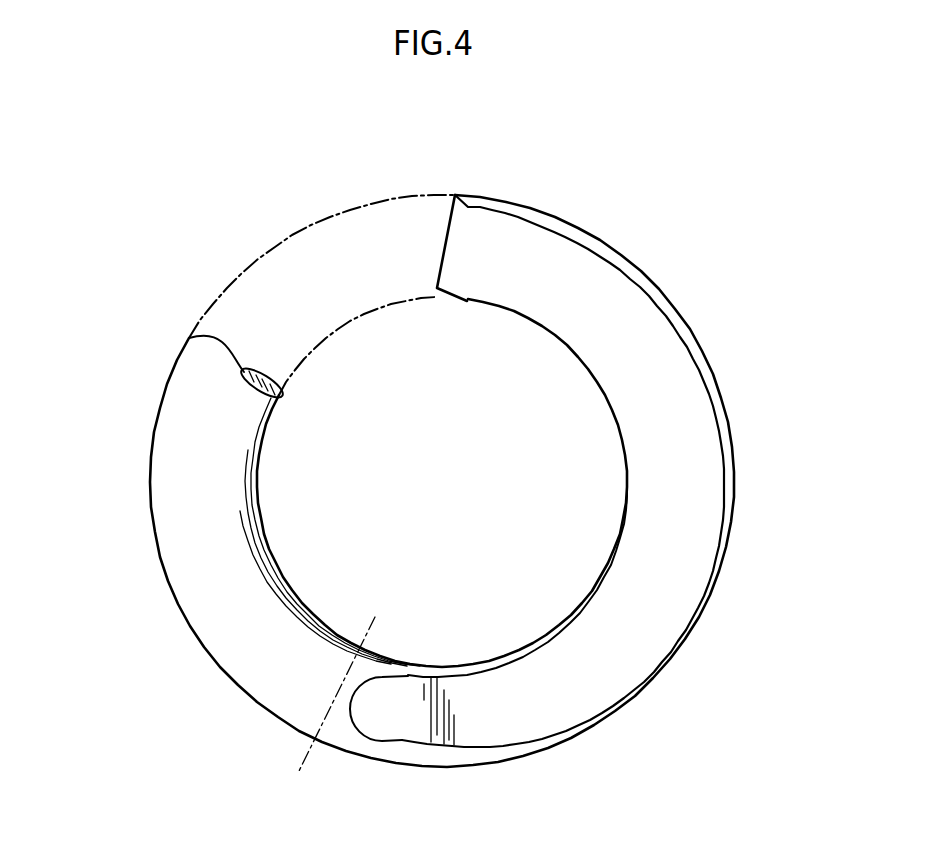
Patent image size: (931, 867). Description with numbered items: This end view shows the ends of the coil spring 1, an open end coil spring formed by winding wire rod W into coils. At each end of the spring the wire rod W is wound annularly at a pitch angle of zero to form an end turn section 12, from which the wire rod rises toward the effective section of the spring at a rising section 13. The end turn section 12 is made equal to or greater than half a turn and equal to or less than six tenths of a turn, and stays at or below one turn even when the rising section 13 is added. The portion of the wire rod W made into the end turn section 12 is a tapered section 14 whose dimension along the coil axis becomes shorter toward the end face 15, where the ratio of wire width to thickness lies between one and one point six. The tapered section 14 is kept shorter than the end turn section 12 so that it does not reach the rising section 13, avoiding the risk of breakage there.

The coil spring 1 is at (634, 215).
The end turn section 12 is at (391, 782).
The rising section 13 is at (188, 427).
The tapered section 14 is at (703, 447).
The end face 15 is at (445, 232).
The wire rod W is at (203, 592).